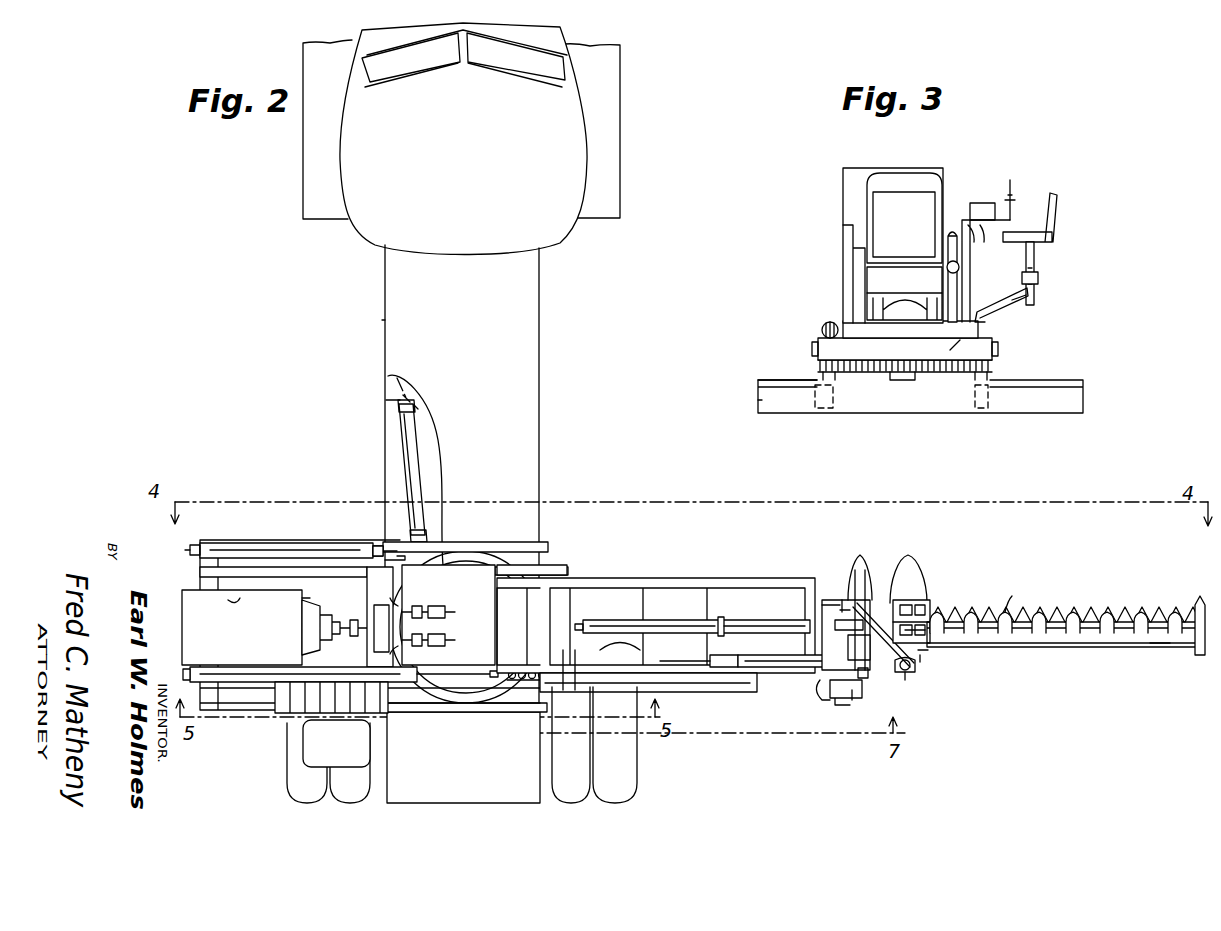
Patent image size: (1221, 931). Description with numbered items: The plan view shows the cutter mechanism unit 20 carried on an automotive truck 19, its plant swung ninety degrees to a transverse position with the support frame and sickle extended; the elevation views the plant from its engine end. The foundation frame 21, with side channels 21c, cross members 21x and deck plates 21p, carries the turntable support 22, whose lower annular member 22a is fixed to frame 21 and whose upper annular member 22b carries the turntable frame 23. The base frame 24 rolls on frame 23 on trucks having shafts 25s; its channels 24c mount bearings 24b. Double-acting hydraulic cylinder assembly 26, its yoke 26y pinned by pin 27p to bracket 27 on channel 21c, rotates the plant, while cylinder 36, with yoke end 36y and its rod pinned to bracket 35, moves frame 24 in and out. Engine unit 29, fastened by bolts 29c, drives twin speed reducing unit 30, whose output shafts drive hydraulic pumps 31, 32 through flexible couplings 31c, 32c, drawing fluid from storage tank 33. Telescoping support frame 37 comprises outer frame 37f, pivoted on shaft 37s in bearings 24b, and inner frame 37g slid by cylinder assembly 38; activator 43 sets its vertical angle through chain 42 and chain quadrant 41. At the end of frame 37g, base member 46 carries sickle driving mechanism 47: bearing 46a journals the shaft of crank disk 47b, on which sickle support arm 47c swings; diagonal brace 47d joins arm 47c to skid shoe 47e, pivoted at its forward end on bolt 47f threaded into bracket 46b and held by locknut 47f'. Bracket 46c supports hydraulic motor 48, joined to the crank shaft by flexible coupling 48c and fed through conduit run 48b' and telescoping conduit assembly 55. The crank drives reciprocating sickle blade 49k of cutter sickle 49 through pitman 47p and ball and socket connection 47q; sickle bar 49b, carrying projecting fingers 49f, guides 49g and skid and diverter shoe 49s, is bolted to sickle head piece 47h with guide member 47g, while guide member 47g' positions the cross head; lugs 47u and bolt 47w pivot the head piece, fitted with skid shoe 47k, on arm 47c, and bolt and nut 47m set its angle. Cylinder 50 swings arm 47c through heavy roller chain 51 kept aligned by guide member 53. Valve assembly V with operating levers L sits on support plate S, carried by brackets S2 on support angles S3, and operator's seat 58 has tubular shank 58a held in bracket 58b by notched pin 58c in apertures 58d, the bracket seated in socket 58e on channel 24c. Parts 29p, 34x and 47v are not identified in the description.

In FIG. 2, the automotive truck 19 is at (585, 253).
In FIG. 2, the cutter mechanism unit 20 is at (606, 548).
In FIG. 2, the foundation frame 21 is at (552, 409).
In FIG. 3, the foundation frame 21 is at (765, 422).
In FIG. 2, the side channel 21c is at (389, 462).
In FIG. 3, the side channel 21c is at (765, 402).
In FIG. 2, the deck plate 21p is at (484, 772).
In FIG. 3, the deck plate 21p is at (760, 380).
In FIG. 3, the cross member 21x is at (817, 412).
In FIG. 2, the turntable support 22 is at (466, 627).
In FIG. 3, the turntable support 22 is at (800, 372).
In FIG. 3, the lower annular member 22a is at (995, 374).
In FIG. 3, the upper annular member 22b is at (998, 360).
In FIG. 2, the turntable frame 23 is at (497, 532).
In FIG. 3, the turntable frame 23 is at (1009, 341).
In FIG. 2, the base frame 24 is at (190, 582).
In FIG. 3, the base frame 24 is at (836, 313).
In FIG. 2, the bearing 24b is at (560, 567).
In FIG. 3, the base frame channel 24c is at (937, 349).
In FIG. 2, the shaft 25s is at (221, 603).
In FIG. 2, the double-acting hydraulic cylinder assembly 26 is at (420, 470).
In FIG. 2, the yoke 26y is at (420, 410).
In FIG. 2, the bracket 27 is at (410, 392).
In FIG. 2, the pin 27p is at (416, 400).
In FIG. 2, the internal combustion engine unit 29 is at (276, 627).
In FIG. 3, the internal combustion engine unit 29 is at (904, 246).
In FIG. 2, the bolt 29c is at (312, 590).
In FIG. 2, the motor pump 29p is at (386, 322).
In FIG. 2, the twin speed reducing unit 30 is at (382, 630).
In FIG. 2, the hydraulic pump 31 is at (448, 640).
In FIG. 2, the flexible coupling 31c is at (414, 655).
In FIG. 2, the hydraulic pump 32 is at (448, 612).
In FIG. 2, the flexible coupling 32c is at (408, 606).
In FIG. 2, the storage tank 33 is at (448, 615).
In FIG. 3, the storage tank 33 is at (852, 197).
In FIG. 2, the cylinder rod end 34x is at (378, 553).
In FIG. 2, the bracket 35 is at (398, 555).
In FIG. 2, the cylinder 36 is at (266, 545).
In FIG. 3, the cylinder 36 is at (822, 335).
In FIG. 2, the yoke end 36y is at (205, 543).
In FIG. 2, the telescoping support frame 37 is at (722, 568).
In FIG. 2, the outer frame 37f is at (670, 576).
In FIG. 2, the inner frame 37g is at (795, 576).
In FIG. 2, the shaft 37s is at (565, 612).
In FIG. 2, the cylinder assembly 38 is at (732, 610).
In FIG. 2, the chain quadrant 41 is at (572, 681).
In FIG. 2, the chain 42 is at (530, 670).
In FIG. 2, the activator 43 is at (282, 652).
In FIG. 3, the activator 43 is at (955, 230).
In FIG. 2, the base member 46 is at (822, 605).
In FIG. 2, the bearing 46a is at (850, 646).
In FIG. 2, the bracket 46b is at (826, 592).
In FIG. 2, the bracket 46c is at (858, 700).
In FIG. 2, the sickle driving mechanism 47 is at (912, 672).
In FIG. 2, the crank disk 47b is at (832, 625).
In FIG. 2, the sickle support arm 47c is at (910, 676).
In FIG. 2, the diagonal brace 47d is at (920, 685).
In FIG. 2, the skid shoe 47e is at (863, 556).
In FIG. 2, the bolt 47f is at (839, 569).
In FIG. 2, the locknut 47f' is at (833, 558).
In FIG. 2, the guide member 47g is at (980, 655).
In FIG. 2, the guide member 47g' is at (950, 602).
In FIG. 2, the sickle head piece 47h is at (932, 612).
In FIG. 2, the skid shoe 47k is at (913, 557).
In FIG. 2, the bolt and nut 47m is at (940, 606).
In FIG. 2, the pitman 47p is at (887, 600).
In FIG. 2, the ball and socket connection 47q is at (920, 610).
In FIG. 2, the apertured lug 47u is at (925, 655).
In FIG. 2, the arm link 47v is at (925, 658).
In FIG. 2, the bolt 47w is at (910, 668).
In FIG. 2, the hydraulic motor 48 is at (847, 705).
In FIG. 2, the conduit run 48b' is at (804, 712).
In FIG. 2, the flexible coupling 48c is at (866, 680).
In FIG. 2, the cutter sickle 49 is at (1063, 662).
In FIG. 2, the sickle bar 49b is at (1157, 640).
In FIG. 2, the projecting finger 49f is at (1030, 612).
In FIG. 2, the guide 49g is at (1107, 640).
In FIG. 2, the reciprocating sickle blade 49k is at (1085, 618).
In FIG. 2, the skid and diverter shoe 49s is at (1198, 600).
In FIG. 2, the cylinder 50 is at (662, 662).
In FIG. 2, the heavy roller chain 51 is at (278, 700).
In FIG. 2, the guide member 53 is at (755, 658).
In FIG. 2, the telescoping conduit assembly 55 is at (692, 698).
In FIG. 2, the operator's seat 58 is at (328, 761).
In FIG. 3, the operator's seat 58 is at (1050, 236).
In FIG. 3, the tubular shank 58a is at (1035, 252).
In FIG. 3, the bracket 58b is at (1010, 296).
In FIG. 3, the notched pin 58c is at (1033, 270).
In FIG. 3, the aperture 58d is at (1038, 280).
In FIG. 3, the socket 58e is at (985, 316).
In FIG. 3, the valve assembly V is at (984, 200).
In FIG. 3, the operating lever L is at (1016, 187).
In FIG. 3, the support plate S is at (972, 245).
In FIG. 3, the bracket S2 is at (993, 247).
In FIG. 3, the support angle S3 is at (966, 264).